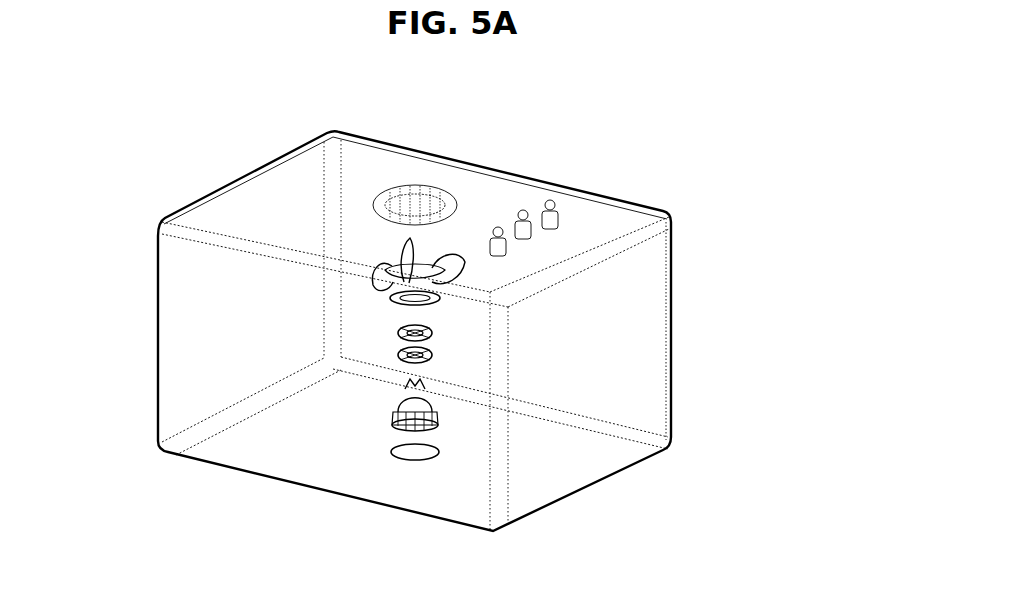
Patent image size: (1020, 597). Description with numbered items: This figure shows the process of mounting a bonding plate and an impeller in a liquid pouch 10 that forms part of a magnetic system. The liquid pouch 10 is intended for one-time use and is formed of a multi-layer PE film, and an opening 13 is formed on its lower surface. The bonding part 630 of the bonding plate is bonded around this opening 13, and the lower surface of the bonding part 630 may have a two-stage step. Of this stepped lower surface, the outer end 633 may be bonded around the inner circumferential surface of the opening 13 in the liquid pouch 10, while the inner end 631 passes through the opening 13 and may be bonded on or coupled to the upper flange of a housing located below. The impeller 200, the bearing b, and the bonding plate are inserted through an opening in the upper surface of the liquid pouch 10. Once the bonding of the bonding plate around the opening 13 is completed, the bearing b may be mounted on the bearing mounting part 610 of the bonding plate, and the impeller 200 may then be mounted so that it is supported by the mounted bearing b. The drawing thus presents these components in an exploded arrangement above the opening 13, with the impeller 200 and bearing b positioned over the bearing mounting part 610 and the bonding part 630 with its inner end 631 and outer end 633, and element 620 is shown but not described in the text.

The liquid pouch 10 is at (205, 458).
The opening 13 is at (406, 457).
The impeller 200 is at (458, 255).
The bearing mounting part 610 is at (408, 381).
The cap member 620 is at (394, 404).
The bonding part 630 is at (602, 397).
The inner end 631 is at (440, 437).
The outer end 633 is at (440, 422).
The bearing b is at (433, 355).